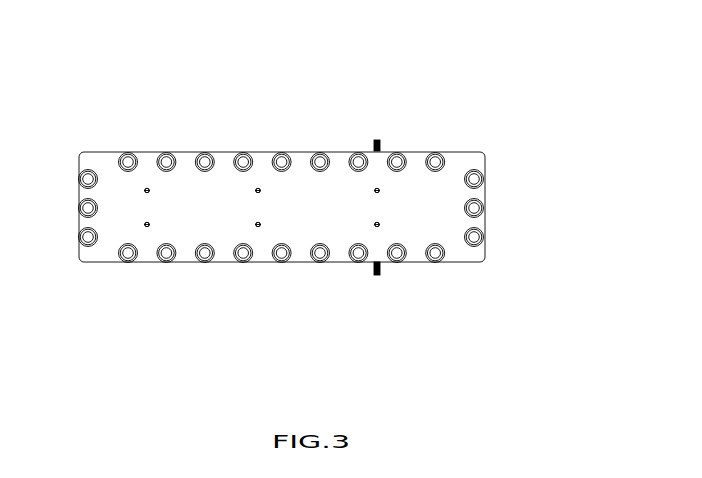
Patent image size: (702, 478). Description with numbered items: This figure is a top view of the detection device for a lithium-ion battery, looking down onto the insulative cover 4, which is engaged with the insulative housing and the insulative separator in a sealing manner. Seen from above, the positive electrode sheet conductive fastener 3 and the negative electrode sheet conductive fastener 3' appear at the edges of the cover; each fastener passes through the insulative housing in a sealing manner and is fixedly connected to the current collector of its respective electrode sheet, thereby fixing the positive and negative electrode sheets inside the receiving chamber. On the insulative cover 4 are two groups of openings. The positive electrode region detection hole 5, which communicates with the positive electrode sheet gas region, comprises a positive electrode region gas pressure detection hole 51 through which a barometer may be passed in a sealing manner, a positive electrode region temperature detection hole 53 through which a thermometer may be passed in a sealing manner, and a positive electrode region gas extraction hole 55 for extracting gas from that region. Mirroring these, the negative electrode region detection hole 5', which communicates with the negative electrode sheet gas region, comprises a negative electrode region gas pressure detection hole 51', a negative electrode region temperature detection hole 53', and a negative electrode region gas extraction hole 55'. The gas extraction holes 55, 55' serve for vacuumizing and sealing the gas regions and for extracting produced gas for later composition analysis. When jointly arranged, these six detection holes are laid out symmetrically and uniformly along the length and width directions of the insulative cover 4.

The positive electrode sheet conductive fastener 3 is at (352, 171).
The negative electrode sheet conductive fastener 3' is at (344, 242).
The insulative cover 4 is at (481, 157).
The positive electrode region detection hole 5 is at (284, 121).
The negative electrode region detection hole 5' is at (276, 304).
The positive electrode region gas pressure detection hole 51 is at (172, 147).
The positive electrode region temperature detection hole 53 is at (286, 136).
The positive electrode region gas extraction hole 55 is at (406, 144).
The negative electrode region gas pressure detection hole 51' is at (174, 279).
The negative electrode region temperature detection hole 53' is at (283, 282).
The negative electrode region gas extraction hole 55' is at (400, 273).